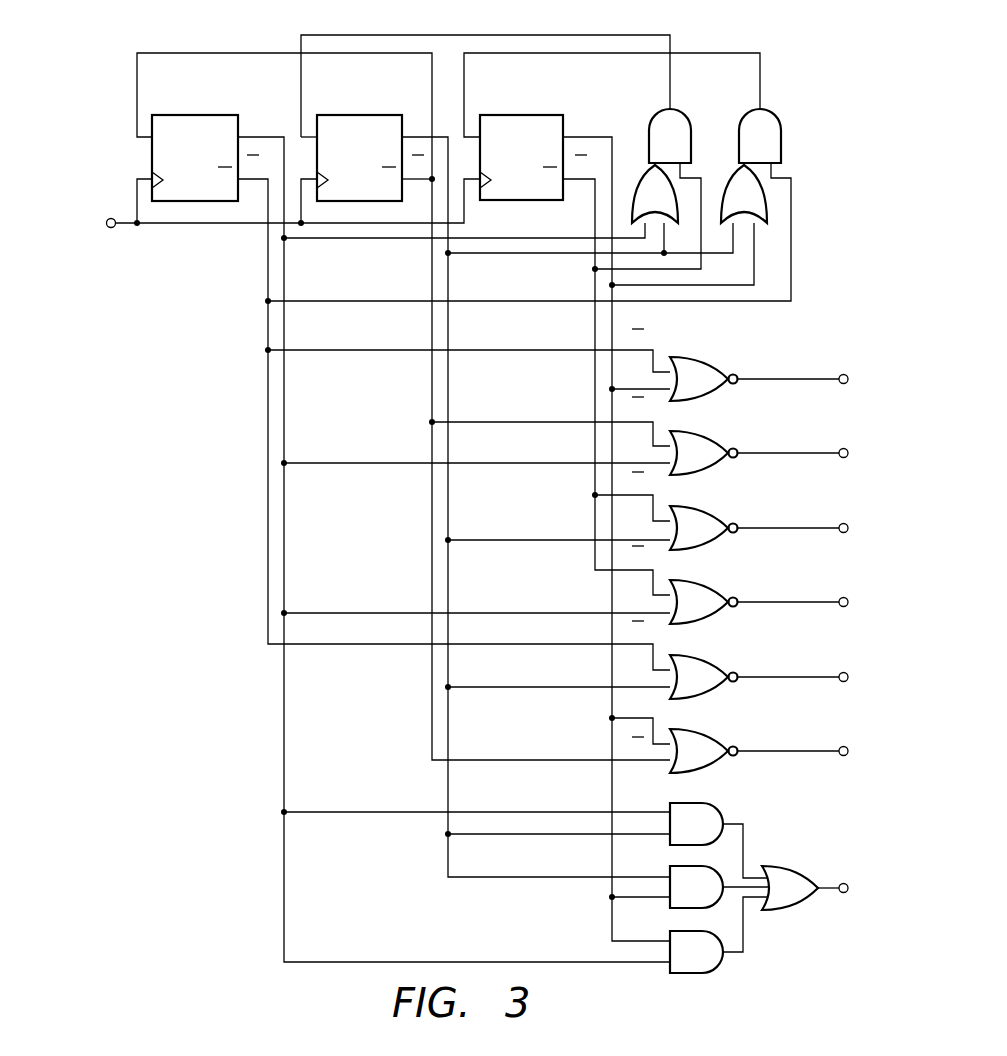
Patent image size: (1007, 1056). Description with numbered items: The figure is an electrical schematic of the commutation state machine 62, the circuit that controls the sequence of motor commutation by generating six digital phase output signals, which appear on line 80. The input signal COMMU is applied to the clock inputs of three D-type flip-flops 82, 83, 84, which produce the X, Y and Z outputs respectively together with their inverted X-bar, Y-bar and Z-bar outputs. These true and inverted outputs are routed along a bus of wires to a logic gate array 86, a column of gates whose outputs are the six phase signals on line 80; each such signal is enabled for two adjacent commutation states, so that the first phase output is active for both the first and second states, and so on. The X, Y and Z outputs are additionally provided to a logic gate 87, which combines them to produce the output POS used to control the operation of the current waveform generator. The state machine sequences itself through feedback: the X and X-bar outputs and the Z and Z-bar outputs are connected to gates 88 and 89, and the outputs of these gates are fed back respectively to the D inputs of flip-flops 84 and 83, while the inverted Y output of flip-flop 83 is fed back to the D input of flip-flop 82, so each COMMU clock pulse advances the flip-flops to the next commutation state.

The commutation state machine 62 is at (186, 518).
The line 80 is at (832, 360).
The D-type flip-flop 82 is at (195, 115).
The D-type flip-flop 83 is at (358, 115).
The D-type flip-flop 84 is at (522, 115).
The logic gate array 86 is at (748, 360).
The logic gate 87 is at (776, 824).
The gate 88 is at (778, 98).
The gate 89 is at (687, 112).